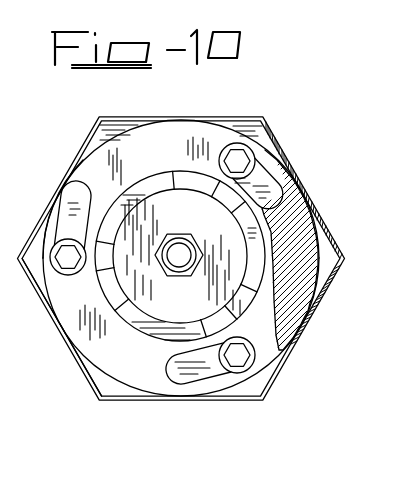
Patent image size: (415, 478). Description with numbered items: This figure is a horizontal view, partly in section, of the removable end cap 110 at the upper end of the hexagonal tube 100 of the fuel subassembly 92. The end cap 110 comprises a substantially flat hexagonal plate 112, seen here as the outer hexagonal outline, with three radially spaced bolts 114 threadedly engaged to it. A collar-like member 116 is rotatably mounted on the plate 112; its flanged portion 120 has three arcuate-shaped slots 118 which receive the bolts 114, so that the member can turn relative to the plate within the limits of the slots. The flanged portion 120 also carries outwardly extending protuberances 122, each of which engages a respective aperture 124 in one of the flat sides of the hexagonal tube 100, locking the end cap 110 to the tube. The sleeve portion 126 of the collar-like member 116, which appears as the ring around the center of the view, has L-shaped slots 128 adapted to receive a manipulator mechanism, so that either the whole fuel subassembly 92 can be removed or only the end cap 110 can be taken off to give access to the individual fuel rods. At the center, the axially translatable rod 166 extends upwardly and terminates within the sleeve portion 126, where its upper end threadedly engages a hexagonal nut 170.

The fuel subassembly 92 is at (281, 110).
The hexagonal tube 100 is at (343, 257).
The removable end cap 110 is at (82, 132).
The hexagonal plate 112 is at (82, 150).
The bolts 114 is at (232, 147).
The collar-like member 116 is at (124, 130).
The arcuate-shaped slots 118 is at (193, 384).
The flanged portion 120 is at (113, 362).
The protuberances 122 is at (294, 193).
The aperture 124 is at (278, 147).
The sleeve portion 126 is at (54, 304).
The L-shaped slots 128 is at (218, 192).
The axially translatable rod 166 is at (178, 271).
The hexagonal nut 170 is at (192, 242).